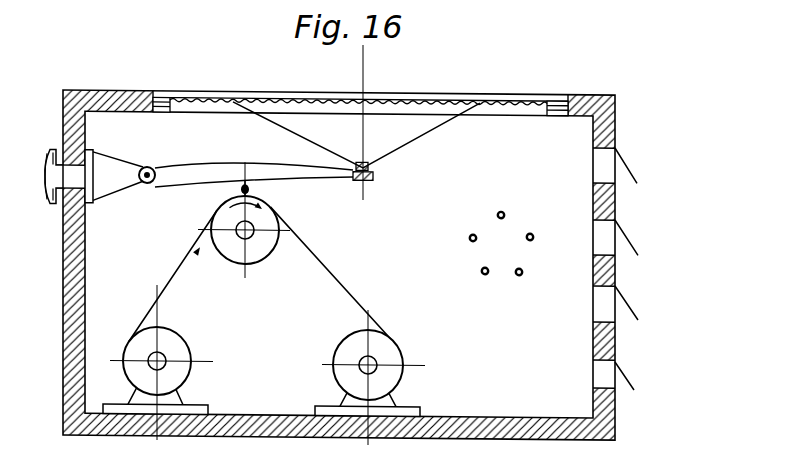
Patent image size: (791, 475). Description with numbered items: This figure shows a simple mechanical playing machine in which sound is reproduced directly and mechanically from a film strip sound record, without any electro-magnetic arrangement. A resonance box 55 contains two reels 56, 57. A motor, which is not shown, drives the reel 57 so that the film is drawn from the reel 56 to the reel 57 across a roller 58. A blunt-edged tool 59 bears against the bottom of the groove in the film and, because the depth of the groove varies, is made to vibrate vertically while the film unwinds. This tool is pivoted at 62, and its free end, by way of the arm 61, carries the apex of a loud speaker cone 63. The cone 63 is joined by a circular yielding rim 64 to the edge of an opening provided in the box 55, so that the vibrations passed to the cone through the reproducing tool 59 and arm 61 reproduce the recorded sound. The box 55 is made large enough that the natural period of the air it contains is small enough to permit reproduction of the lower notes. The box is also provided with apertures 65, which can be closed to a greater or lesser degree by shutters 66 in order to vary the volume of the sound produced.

The resonance box 55 is at (555, 380).
The reel 56 is at (135, 352).
The reel 57 is at (380, 352).
The roller 58 is at (278, 222).
The blunt-edged tool 59 is at (247, 179).
The arm 61 is at (205, 170).
The pivot 62 is at (152, 165).
The loud speaker cone 63 is at (421, 132).
The circular yielding rim 64 is at (516, 96).
The apertures 65 is at (593, 304).
The shutters 66 is at (625, 294).